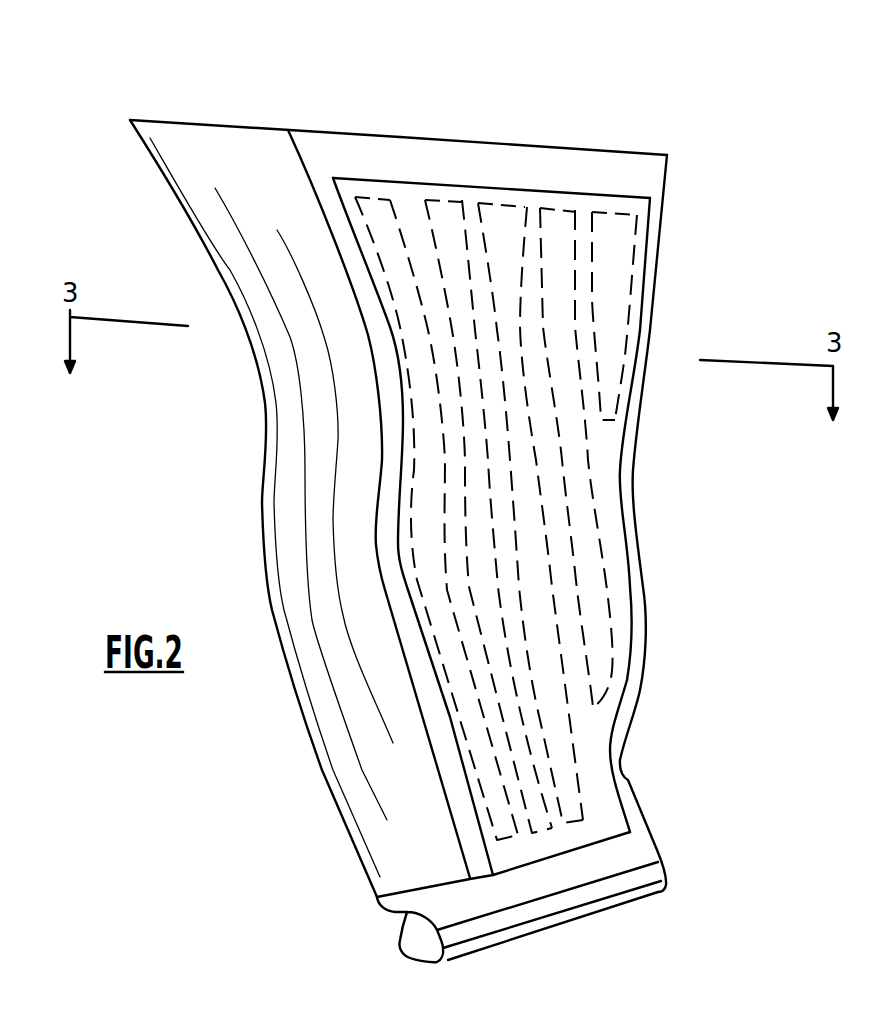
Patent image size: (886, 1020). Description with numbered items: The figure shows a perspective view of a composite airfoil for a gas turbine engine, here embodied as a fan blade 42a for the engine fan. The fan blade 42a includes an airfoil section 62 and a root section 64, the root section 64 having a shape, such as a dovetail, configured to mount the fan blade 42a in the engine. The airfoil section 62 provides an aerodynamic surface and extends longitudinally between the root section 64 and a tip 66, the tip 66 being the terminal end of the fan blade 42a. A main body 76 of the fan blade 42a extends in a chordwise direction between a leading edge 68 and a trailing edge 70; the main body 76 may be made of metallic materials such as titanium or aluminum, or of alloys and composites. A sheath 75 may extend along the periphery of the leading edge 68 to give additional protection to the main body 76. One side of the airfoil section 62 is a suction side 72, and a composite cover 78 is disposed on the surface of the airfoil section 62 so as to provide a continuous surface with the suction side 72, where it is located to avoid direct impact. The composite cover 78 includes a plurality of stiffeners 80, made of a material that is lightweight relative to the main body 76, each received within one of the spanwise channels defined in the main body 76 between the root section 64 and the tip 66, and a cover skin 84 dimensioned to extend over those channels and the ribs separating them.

The fan blade 42a is at (104, 61).
The airfoil section 62 is at (661, 345).
The root section 64 is at (672, 862).
The tip 66 is at (408, 135).
The leading edge 68 is at (267, 452).
The trailing edge 70 is at (637, 455).
The suction side 72 is at (647, 178).
The sheath 75 is at (253, 260).
The main body 76 is at (590, 165).
The composite cover 78 is at (480, 176).
The stiffeners 80 is at (375, 205).
The cover skin 84 is at (645, 265).